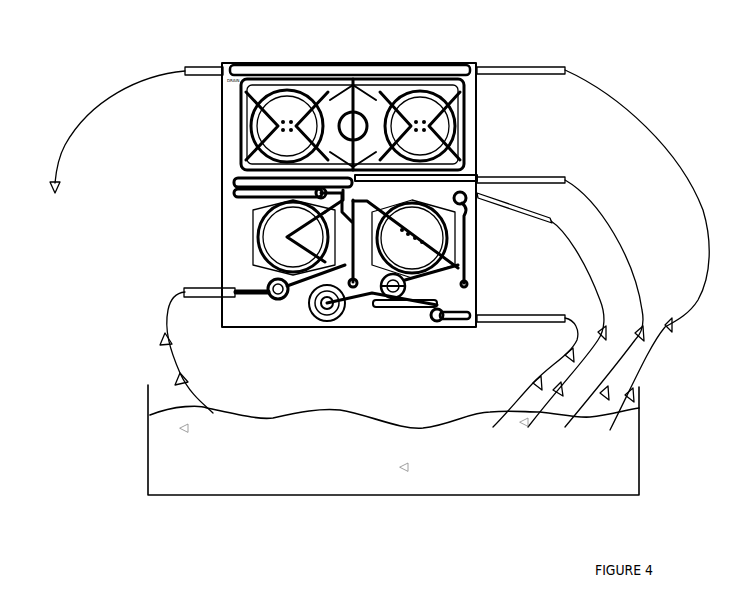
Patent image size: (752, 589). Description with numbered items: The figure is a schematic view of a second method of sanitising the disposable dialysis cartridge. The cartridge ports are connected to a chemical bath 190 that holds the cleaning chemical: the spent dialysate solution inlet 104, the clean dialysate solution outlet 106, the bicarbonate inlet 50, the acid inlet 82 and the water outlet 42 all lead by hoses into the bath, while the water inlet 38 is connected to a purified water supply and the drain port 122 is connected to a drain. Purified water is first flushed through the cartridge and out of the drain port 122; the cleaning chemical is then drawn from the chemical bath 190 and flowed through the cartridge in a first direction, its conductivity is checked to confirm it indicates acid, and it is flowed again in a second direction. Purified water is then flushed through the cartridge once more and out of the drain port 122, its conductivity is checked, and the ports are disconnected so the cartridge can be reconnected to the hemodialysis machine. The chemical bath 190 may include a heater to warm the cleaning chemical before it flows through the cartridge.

The drain port 122 is at (225, 67).
The spent dialysate solution inlet 104 is at (477, 63).
The clean dialysate solution outlet 106 is at (477, 173).
The water outlet 42 is at (467, 200).
The water inlet 38 is at (477, 280).
The bicarbonate inlet 50 is at (477, 313).
The acid inlet 82 is at (227, 288).
The chemical bath 190 is at (170, 472).